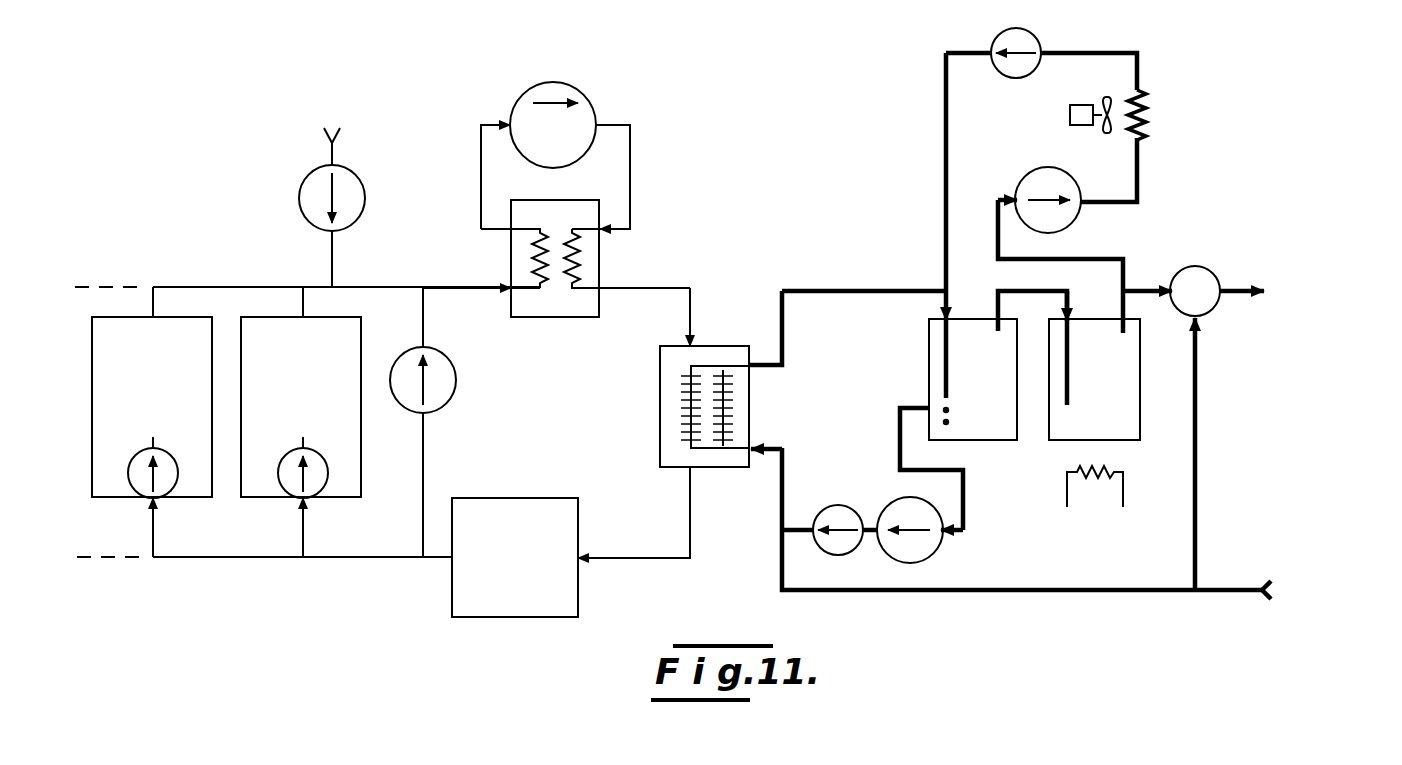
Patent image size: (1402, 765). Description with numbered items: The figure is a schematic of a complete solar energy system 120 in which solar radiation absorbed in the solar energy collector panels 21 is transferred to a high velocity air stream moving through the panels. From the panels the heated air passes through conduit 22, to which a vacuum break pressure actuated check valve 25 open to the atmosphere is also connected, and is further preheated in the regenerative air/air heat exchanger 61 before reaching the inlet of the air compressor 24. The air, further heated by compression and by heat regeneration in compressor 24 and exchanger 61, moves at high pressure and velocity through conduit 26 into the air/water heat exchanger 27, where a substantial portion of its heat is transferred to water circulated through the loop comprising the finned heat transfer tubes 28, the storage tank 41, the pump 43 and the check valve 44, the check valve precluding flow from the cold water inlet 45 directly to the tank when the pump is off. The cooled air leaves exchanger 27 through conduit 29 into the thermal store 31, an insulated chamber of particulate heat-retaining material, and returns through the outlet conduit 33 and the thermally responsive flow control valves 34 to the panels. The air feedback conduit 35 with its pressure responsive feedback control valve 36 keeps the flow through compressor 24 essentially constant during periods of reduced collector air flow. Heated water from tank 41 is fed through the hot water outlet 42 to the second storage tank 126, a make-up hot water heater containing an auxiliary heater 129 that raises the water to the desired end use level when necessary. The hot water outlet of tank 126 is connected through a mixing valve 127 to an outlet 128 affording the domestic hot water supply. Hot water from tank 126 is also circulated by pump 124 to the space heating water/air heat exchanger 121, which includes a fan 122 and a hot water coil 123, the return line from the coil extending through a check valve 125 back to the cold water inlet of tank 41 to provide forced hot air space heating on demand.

The solar energy collector panel 21 is at (91, 355).
The conduit 22 is at (404, 268).
The air compressor 24 is at (588, 102).
The vacuum break pressure actuated check valve 25 is at (298, 196).
The conduit 26 is at (693, 290).
The heat exchanger 27 is at (660, 383).
The finned heat transfer tubes 28 is at (680, 428).
The conduit 29 is at (637, 560).
The thermal store 31 is at (447, 606).
The outlet conduit 33 is at (283, 558).
The temperature responsive air flow control valve 34 is at (130, 494).
The air feedback conduit 35 is at (426, 459).
The pressure responsive feedback control valve 36 is at (455, 393).
The storage tank 41 is at (929, 360).
The hot water outlet 42 is at (997, 300).
The pump 43 is at (934, 552).
The check valve 44 is at (851, 483).
The cold water inlet 45 is at (1250, 570).
The regenerative heat exchanger 61 is at (565, 320).
The solar energy system 120 is at (725, 188).
The water/air heat exchanger 121 is at (1118, 130).
The fan 122 is at (1095, 100).
The hot water coil 123 is at (1152, 110).
The pump 124 is at (1025, 175).
The check valve 125 is at (1033, 38).
The storage tank 126 is at (1140, 379).
The mixing valve 127 is at (1197, 268).
The outlet 128 is at (1236, 300).
The auxiliary heater 129 is at (1115, 470).